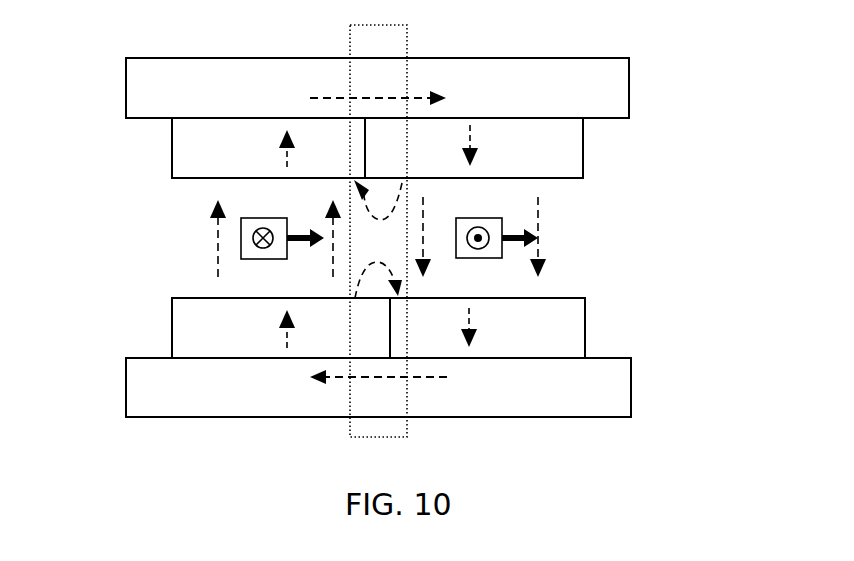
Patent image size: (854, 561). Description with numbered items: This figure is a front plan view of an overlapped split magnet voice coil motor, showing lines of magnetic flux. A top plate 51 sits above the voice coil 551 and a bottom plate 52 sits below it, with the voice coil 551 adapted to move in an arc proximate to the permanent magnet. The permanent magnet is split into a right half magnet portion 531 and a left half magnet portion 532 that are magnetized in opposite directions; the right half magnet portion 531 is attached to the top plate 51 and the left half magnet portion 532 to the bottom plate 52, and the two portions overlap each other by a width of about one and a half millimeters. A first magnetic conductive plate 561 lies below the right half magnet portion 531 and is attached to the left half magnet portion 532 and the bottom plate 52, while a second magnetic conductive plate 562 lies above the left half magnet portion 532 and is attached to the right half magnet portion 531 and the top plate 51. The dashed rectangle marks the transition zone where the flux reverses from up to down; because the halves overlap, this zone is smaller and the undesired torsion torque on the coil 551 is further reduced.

The top plate 51 is at (615, 85).
The bottom plate 52 is at (609, 395).
The right half magnet portion 531 is at (567, 158).
The left half magnet portion 532 is at (197, 335).
The voice coil 551 is at (495, 249).
The first magnetic conductive plate 561 is at (188, 154).
The second magnetic conductive plate 562 is at (548, 329).